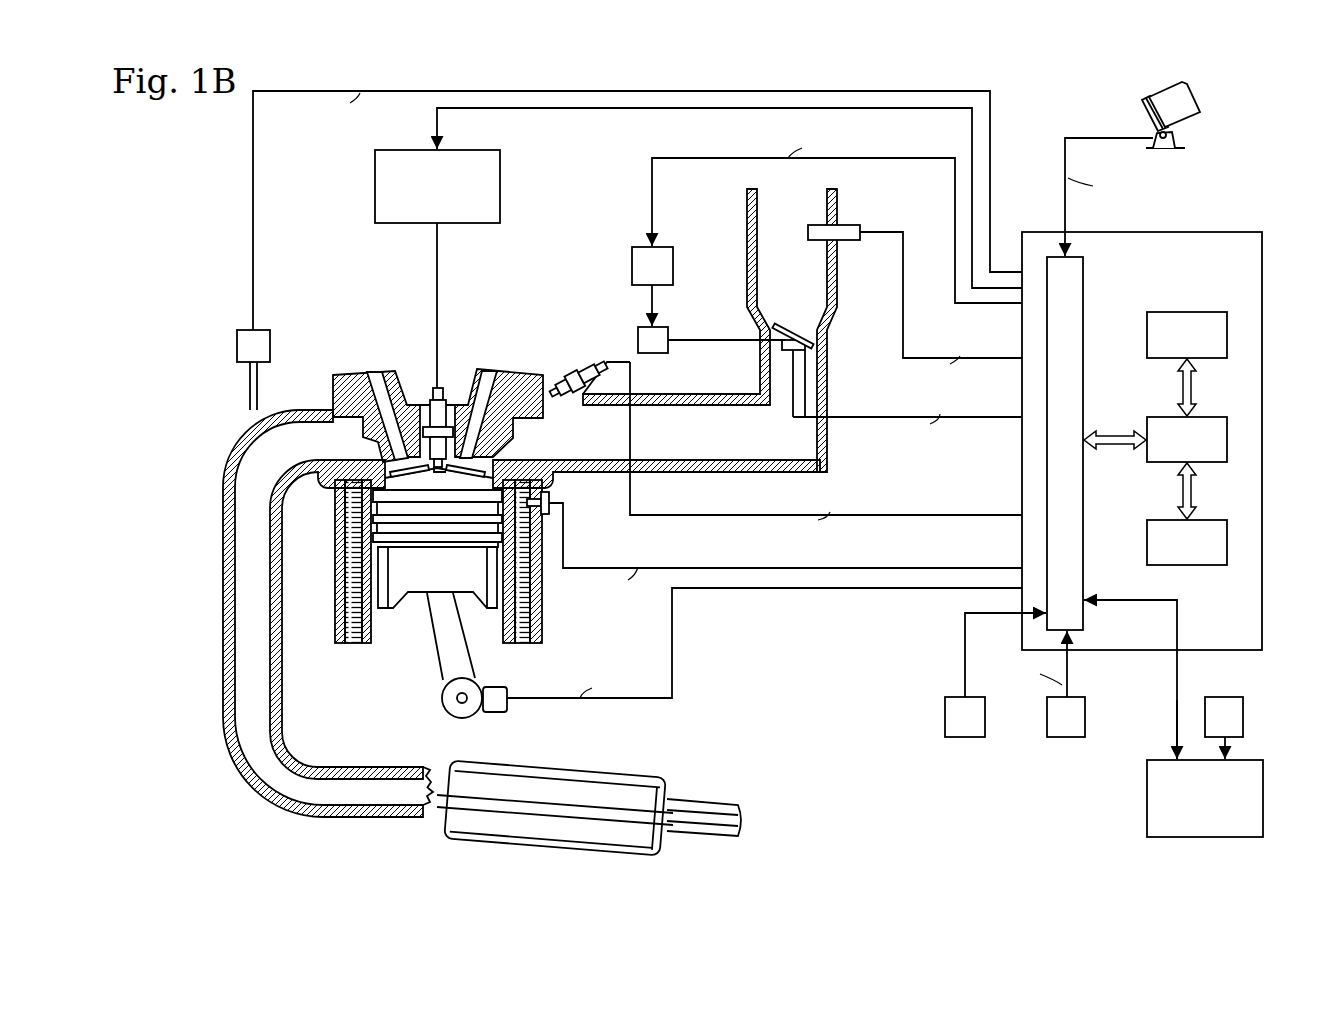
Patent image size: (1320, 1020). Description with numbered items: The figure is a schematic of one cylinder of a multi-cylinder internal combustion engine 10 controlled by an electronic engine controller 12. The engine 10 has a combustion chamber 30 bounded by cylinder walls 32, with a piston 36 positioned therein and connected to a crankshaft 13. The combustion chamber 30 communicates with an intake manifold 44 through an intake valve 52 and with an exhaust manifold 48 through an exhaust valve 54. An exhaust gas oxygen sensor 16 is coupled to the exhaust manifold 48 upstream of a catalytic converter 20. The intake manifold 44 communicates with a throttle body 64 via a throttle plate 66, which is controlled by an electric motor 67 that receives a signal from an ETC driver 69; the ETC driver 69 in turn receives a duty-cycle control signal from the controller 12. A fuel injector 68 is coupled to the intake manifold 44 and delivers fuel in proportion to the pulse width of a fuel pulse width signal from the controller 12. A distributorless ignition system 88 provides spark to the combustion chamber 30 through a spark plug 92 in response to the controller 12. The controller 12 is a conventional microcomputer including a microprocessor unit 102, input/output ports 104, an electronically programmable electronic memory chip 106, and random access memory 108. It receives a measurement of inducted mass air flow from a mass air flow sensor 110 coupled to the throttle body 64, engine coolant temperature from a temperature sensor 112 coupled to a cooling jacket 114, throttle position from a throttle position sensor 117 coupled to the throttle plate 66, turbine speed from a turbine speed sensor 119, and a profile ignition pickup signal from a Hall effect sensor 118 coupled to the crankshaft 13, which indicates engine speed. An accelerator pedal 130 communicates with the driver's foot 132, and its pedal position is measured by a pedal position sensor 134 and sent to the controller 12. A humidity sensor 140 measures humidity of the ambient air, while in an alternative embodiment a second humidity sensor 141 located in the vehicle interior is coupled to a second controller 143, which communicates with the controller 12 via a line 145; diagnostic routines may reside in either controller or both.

The internal combustion engine 10 is at (366, 728).
The electronic engine controller 12 is at (1224, 232).
The crankshaft 13 is at (465, 713).
The exhaust gas oxygen sensor 16 is at (260, 330).
The catalytic converter 20 is at (625, 771).
The combustion chamber 30 is at (427, 483).
The cylinder walls 32 is at (373, 645).
The piston 36 is at (437, 595).
The intake manifold 44 is at (716, 448).
The exhaust manifold 48 is at (250, 478).
The intake valve 52 is at (490, 455).
The exhaust valve 54 is at (383, 452).
The throttle body 64 is at (822, 205).
The throttle plate 66 is at (778, 328).
The electric motor 67 is at (658, 328).
The fuel injector 68 is at (572, 372).
The ETC driver 69 is at (658, 248).
The distributorless ignition system 88 is at (465, 152).
The spark plug 92 is at (440, 388).
The microprocessor unit 102 is at (1212, 417).
The input/output ports 104 is at (1088, 300).
The electronic memory chip 106 is at (1180, 312).
The random access memory 108 is at (1212, 520).
The mass air flow sensor 110 is at (852, 225).
The temperature sensor 112 is at (550, 497).
The cooling jacket 114 is at (525, 615).
The throttle position sensor 117 is at (797, 325).
The Hall effect sensor 118 is at (500, 687).
The turbine speed sensor 119 is at (1078, 697).
The accelerator pedal 130 is at (1143, 105).
The driver's foot 132 is at (1200, 102).
The pedal position sensor 134 is at (1182, 142).
The humidity sensor 140 is at (950, 697).
The second humidity sensor 141 is at (1244, 712).
The second controller 143 is at (1185, 812).
The line 145 is at (1178, 607).